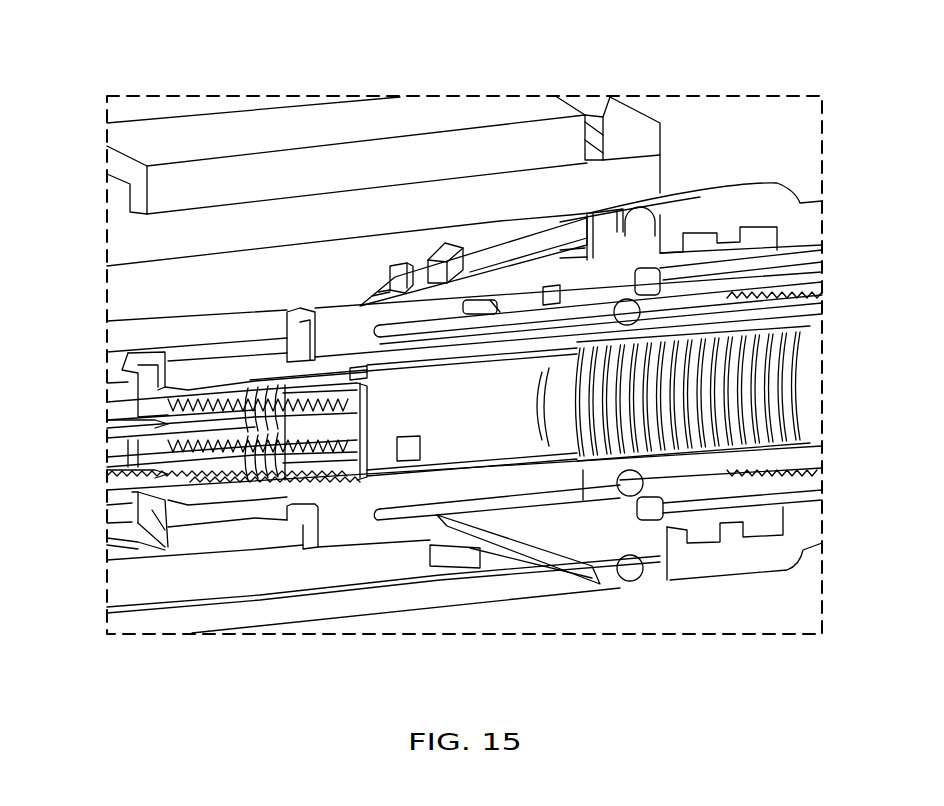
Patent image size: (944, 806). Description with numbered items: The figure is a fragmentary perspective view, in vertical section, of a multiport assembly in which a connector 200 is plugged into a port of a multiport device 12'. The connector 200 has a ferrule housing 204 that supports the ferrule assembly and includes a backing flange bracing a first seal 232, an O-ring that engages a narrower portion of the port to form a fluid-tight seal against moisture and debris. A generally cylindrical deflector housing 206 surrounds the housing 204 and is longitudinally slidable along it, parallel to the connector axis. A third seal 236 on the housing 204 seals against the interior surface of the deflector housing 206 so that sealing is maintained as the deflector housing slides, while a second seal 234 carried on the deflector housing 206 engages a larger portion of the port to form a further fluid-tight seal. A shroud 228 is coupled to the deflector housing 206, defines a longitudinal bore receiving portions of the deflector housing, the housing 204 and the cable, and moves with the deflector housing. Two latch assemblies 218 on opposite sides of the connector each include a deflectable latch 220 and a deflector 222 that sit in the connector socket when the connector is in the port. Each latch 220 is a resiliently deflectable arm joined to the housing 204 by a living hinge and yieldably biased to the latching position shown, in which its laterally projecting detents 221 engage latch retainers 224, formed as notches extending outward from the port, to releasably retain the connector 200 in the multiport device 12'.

The multiport device 12' is at (383, 135).
The connector 200 is at (772, 106).
The housing 204 is at (258, 348).
The deflector housing 206 is at (645, 237).
The latch assembly 218 is at (430, 223).
The deflectable latch 220 is at (530, 243).
The detent 221 is at (392, 286).
The deflector 222 is at (440, 258).
The latch retainer 224 is at (397, 266).
The shroud 228 is at (805, 223).
The first seal 232 is at (308, 350).
The second seal 234 is at (646, 567).
The third seal 236 is at (627, 312).